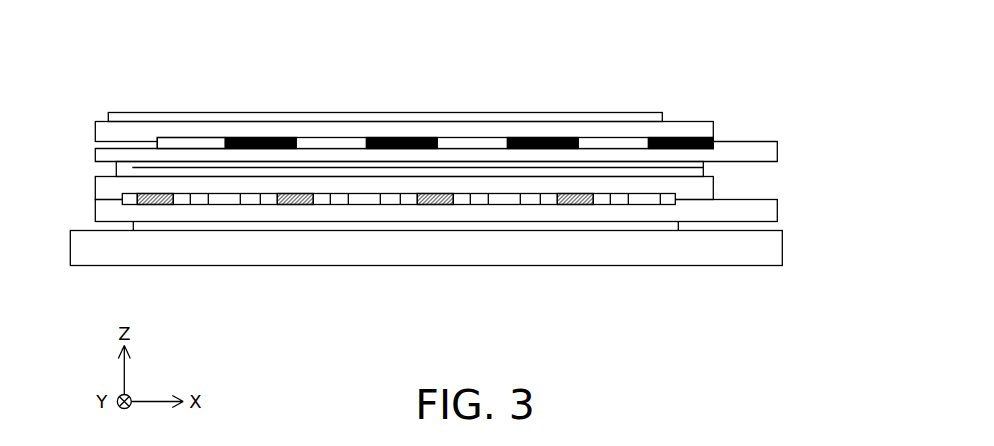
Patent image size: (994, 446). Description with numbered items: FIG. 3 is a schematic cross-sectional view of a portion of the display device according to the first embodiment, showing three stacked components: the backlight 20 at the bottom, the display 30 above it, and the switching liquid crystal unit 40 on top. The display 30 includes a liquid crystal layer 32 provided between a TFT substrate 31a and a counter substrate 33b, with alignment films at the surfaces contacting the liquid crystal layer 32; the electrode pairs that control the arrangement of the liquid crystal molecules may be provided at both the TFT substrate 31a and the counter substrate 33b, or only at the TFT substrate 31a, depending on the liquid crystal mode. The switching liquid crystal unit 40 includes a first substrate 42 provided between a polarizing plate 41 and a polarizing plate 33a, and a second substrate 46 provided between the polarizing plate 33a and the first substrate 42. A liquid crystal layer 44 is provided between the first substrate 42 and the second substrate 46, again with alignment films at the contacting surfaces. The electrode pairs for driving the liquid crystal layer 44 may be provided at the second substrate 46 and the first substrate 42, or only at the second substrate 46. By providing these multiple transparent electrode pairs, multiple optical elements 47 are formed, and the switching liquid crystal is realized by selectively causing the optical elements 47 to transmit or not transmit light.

The backlight 20 is at (767, 256).
The display 30 is at (470, 226).
The TFT substrate 31a is at (740, 213).
The liquid crystal layer 32 is at (108, 192).
The polarizing plate 33a is at (705, 170).
The counter substrate 33b is at (698, 187).
The switching liquid crystal unit 40 is at (497, 100).
The polarizing plate 41 is at (592, 114).
The first substrate 42 is at (690, 130).
The liquid crystal layer 44 is at (493, 94).
The second substrate 46 is at (751, 150).
The optical elements 47 is at (193, 143).